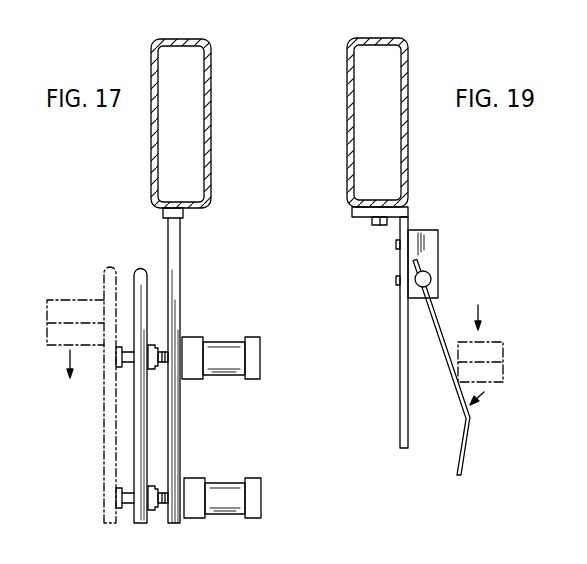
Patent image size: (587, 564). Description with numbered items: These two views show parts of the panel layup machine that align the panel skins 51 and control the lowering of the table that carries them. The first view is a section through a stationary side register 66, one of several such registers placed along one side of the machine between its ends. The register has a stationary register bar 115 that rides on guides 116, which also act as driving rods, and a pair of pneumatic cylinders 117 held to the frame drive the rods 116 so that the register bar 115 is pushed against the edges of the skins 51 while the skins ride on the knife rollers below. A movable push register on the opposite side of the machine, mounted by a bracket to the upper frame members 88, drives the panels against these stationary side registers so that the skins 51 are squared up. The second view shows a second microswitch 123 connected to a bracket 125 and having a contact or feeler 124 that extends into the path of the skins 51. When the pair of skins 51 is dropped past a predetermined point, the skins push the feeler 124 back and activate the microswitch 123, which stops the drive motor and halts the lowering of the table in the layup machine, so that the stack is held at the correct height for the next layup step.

In FIG. 17, the stationary side register assembly 66 is at (206, 267).
In FIG. 17, the upper frame member 88 is at (211, 165).
In FIG. 19, the upper frame member 88 is at (409, 164).
In FIG. 17, the skin 51 is at (80, 298).
In FIG. 19, the skin 51 is at (490, 341).
In FIG. 17, the stationary register bar 115 is at (136, 420).
In FIG. 17, the guide (driving rod) 116 is at (161, 364).
In FIG. 17, the pneumatic cylinder 117 is at (221, 343).
In FIG. 19, the second microswitch 123 is at (439, 250).
In FIG. 19, the contact or feeler 124 is at (469, 440).
In FIG. 19, the bracket 125 is at (400, 356).